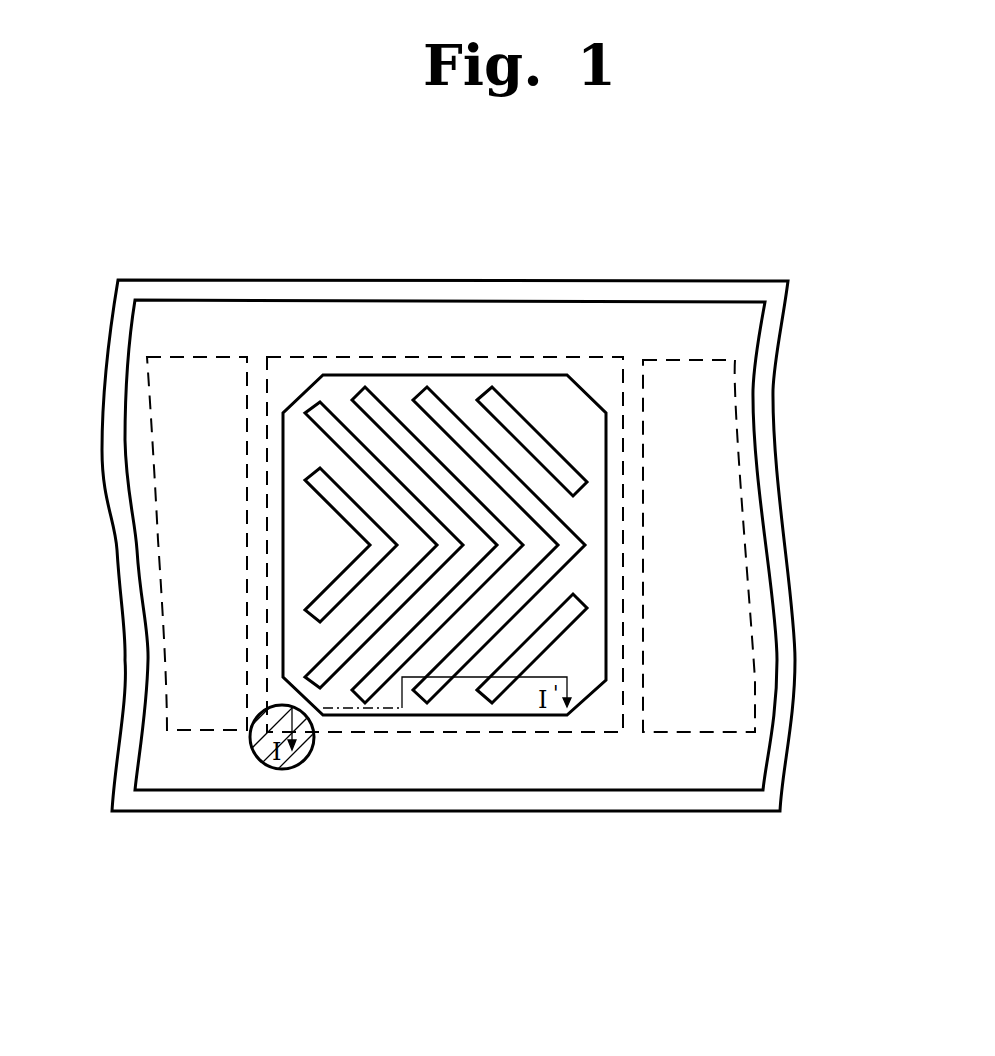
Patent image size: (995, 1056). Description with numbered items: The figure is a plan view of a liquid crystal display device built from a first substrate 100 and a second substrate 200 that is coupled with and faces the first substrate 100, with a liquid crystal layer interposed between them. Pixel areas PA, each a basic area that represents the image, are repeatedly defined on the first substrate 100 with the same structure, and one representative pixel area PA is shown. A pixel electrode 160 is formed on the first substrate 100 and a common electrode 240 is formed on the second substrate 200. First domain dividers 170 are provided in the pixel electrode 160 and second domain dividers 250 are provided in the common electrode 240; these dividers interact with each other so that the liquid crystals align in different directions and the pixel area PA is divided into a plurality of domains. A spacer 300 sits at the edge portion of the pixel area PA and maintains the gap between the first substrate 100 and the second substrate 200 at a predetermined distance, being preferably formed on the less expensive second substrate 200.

The first substrate 100 is at (753, 427).
The second substrate 200 is at (775, 470).
The common electrode 240 is at (770, 530).
The pixel electrode 160 is at (578, 408).
The first domain divider 170 is at (319, 403).
The second domain divider 250 is at (317, 470).
The spacer 300 is at (259, 714).
The pixel area PA is at (190, 721).